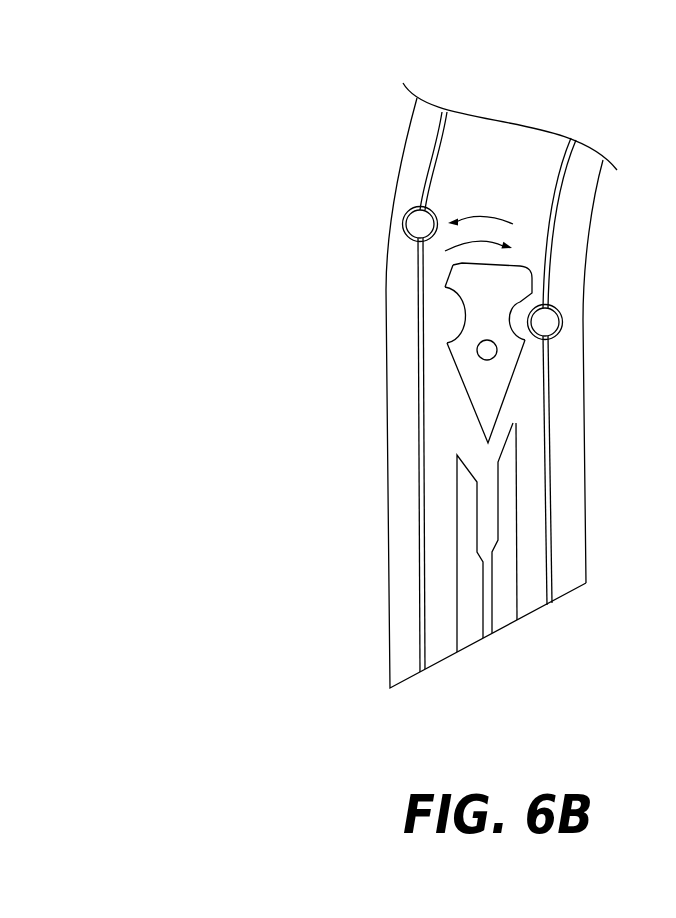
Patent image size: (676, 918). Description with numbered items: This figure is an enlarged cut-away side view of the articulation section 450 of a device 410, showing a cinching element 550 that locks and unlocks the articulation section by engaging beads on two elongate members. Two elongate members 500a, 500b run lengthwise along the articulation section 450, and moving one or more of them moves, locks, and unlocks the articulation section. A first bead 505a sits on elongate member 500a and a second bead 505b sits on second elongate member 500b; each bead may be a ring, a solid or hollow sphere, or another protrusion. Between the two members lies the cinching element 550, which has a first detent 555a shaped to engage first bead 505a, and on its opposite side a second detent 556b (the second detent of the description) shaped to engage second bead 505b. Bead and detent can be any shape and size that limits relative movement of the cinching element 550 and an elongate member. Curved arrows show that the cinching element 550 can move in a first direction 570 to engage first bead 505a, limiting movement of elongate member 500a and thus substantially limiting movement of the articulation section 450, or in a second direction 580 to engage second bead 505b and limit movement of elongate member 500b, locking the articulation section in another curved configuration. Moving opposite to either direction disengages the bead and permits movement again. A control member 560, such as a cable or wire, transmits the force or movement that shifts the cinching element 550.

The device 410 is at (330, 547).
The articulation section 450 is at (384, 94).
The elongate member 500a is at (563, 195).
The second elongate member 500b is at (427, 163).
The first bead 505a is at (563, 323).
The second bead 505b is at (403, 220).
The cinching element 550 is at (360, 406).
The first detent 555a is at (521, 335).
The engagement notch 556b is at (436, 317).
The control member 560 is at (510, 638).
The first direction 570 is at (474, 242).
The second direction 580 is at (479, 217).